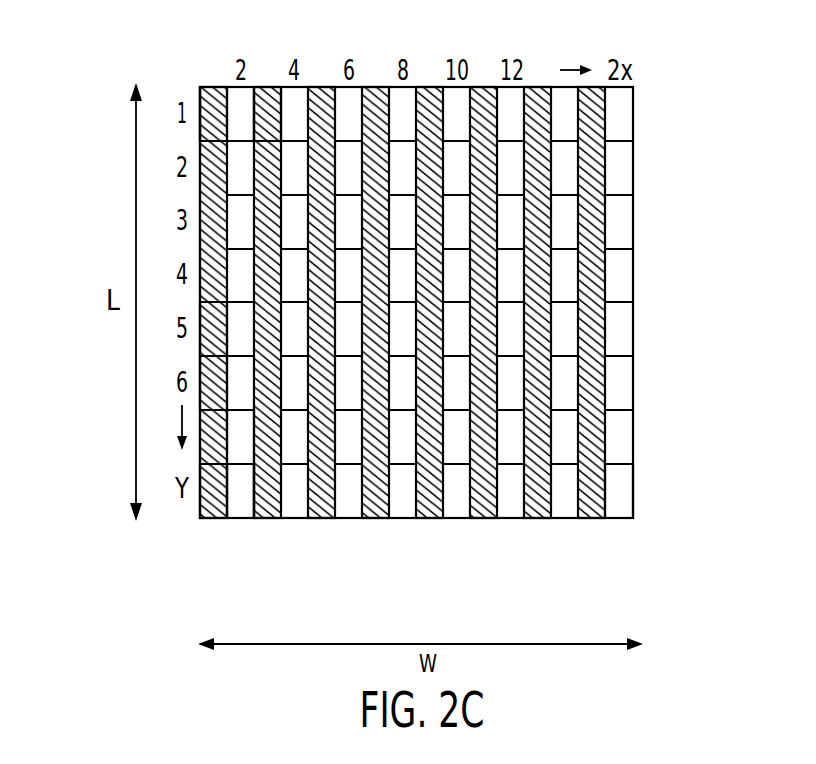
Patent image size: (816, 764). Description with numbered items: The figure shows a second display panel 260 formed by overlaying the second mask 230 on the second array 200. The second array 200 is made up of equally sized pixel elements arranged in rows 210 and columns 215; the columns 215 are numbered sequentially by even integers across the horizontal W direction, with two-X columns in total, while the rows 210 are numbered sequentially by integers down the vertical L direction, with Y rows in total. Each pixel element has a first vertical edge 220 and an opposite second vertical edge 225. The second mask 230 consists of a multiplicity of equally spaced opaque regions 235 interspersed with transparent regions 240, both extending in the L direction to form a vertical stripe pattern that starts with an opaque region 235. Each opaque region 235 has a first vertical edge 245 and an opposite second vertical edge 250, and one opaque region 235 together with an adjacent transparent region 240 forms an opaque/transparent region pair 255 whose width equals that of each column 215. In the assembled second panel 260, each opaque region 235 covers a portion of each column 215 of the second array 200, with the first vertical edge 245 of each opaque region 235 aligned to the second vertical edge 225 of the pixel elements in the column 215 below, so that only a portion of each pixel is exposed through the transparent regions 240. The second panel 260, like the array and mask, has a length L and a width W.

The second array 200 is at (543, 85).
The rows 210 is at (113, 90).
The columns 215 is at (203, 56).
The first vertical edge 220 is at (200, 395).
The second vertical edge 225 is at (227, 487).
The second mask 230 is at (648, 503).
The opaque region 235 is at (272, 87).
The transparent region 240 is at (257, 527).
The first vertical edge 245 is at (200, 347).
The second vertical edge 250 is at (227, 434).
The opaque/transparent region pair 255 is at (257, 577).
The second panel 260 is at (700, 110).